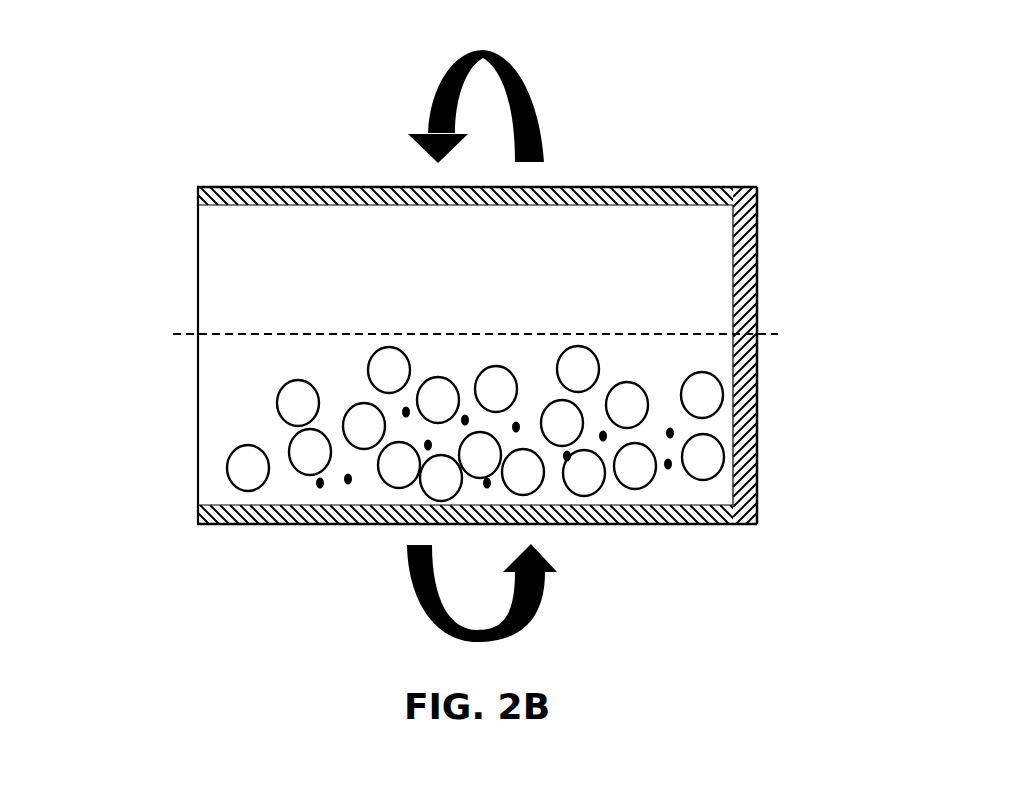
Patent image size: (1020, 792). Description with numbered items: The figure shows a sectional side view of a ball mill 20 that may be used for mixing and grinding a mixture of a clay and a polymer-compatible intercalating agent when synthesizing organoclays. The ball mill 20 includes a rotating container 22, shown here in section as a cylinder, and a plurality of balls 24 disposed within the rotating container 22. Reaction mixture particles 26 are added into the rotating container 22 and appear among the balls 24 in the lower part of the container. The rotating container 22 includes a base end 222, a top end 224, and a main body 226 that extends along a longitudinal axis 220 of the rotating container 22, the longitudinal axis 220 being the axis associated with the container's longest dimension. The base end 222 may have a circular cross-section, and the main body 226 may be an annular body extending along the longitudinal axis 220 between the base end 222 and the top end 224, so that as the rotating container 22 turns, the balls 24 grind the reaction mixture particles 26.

The ball mill 20 is at (223, 41).
The rotating container 22 is at (835, 557).
The longitudinal axis 220 is at (173, 335).
The base end 222 is at (737, 500).
The top end 224 is at (197, 495).
The main body 226 is at (337, 523).
The balls 24 is at (705, 392).
The reaction mixture particles 26 is at (320, 483).